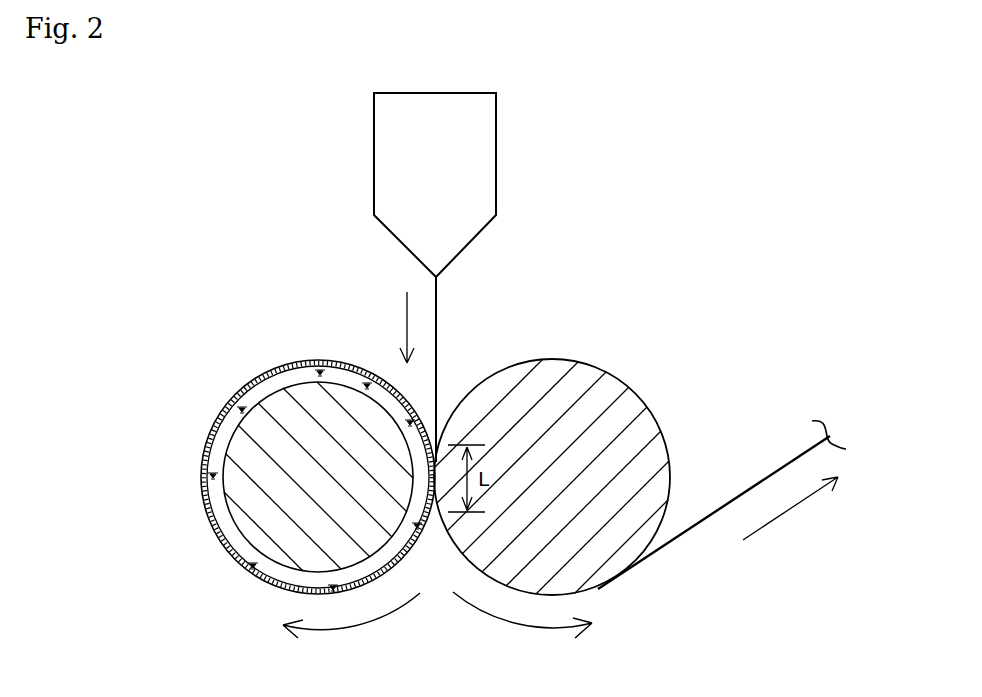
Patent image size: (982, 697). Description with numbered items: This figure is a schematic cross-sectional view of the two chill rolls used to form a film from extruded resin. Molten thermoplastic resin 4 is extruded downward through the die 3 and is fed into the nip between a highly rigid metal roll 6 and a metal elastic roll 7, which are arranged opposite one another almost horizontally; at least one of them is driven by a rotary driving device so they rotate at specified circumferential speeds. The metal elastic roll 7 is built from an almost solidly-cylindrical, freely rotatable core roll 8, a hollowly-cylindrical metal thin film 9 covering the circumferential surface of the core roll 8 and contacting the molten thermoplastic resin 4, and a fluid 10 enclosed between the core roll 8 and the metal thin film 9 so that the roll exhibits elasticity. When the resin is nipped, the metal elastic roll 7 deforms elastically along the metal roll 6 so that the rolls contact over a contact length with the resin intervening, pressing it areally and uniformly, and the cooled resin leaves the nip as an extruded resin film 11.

The die 3 is at (476, 152).
The molten thermoplastic resin 4 is at (438, 316).
The metal roll 6 is at (617, 433).
The metal elastic roll 7 is at (254, 477).
The core roll 8 is at (243, 458).
The metal thin film 9 is at (203, 490).
The fluid 10 is at (227, 527).
The extruded resin film 11 is at (708, 517).